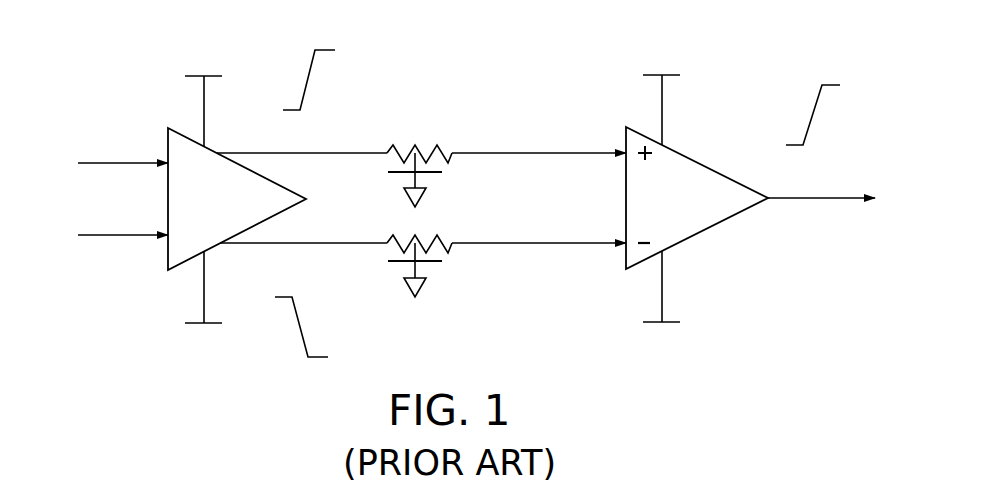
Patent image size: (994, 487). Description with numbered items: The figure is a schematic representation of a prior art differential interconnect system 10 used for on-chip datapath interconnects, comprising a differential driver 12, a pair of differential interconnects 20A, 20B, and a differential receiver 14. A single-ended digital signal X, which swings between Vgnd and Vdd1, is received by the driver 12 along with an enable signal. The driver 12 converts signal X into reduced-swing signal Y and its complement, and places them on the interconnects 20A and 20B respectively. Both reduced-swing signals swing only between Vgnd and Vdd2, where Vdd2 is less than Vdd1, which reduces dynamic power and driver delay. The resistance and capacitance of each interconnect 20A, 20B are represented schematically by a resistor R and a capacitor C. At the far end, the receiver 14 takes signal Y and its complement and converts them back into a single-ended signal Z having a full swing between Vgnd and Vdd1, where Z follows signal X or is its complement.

The interconnect system 10 is at (520, 118).
The driver 12 is at (187, 263).
The receiver 14 is at (697, 234).
The interconnect 20A is at (502, 154).
The interconnect 20B is at (502, 244).